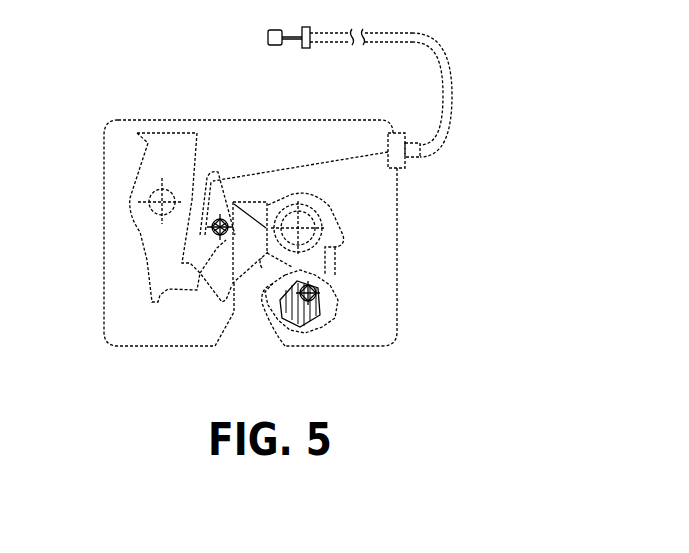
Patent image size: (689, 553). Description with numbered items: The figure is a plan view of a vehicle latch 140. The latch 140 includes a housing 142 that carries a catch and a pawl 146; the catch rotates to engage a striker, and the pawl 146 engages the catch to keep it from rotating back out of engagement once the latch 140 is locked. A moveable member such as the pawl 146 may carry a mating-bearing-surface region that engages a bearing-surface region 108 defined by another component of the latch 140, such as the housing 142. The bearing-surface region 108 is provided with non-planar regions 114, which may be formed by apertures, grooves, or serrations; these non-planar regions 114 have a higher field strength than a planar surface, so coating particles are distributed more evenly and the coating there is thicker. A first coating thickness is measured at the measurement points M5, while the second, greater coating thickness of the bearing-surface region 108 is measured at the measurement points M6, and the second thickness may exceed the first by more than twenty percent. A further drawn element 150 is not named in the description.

The vehicle latch 140 is at (156, 68).
The housing 142 is at (398, 283).
The pawl 146 is at (137, 223).
The measurement points M5 is at (238, 233).
The measurement points M6 is at (322, 286).
The mounting plate 150 is at (252, 292).
The bearing-surface region 108 is at (357, 330).
The non-planar regions 114 is at (318, 320).